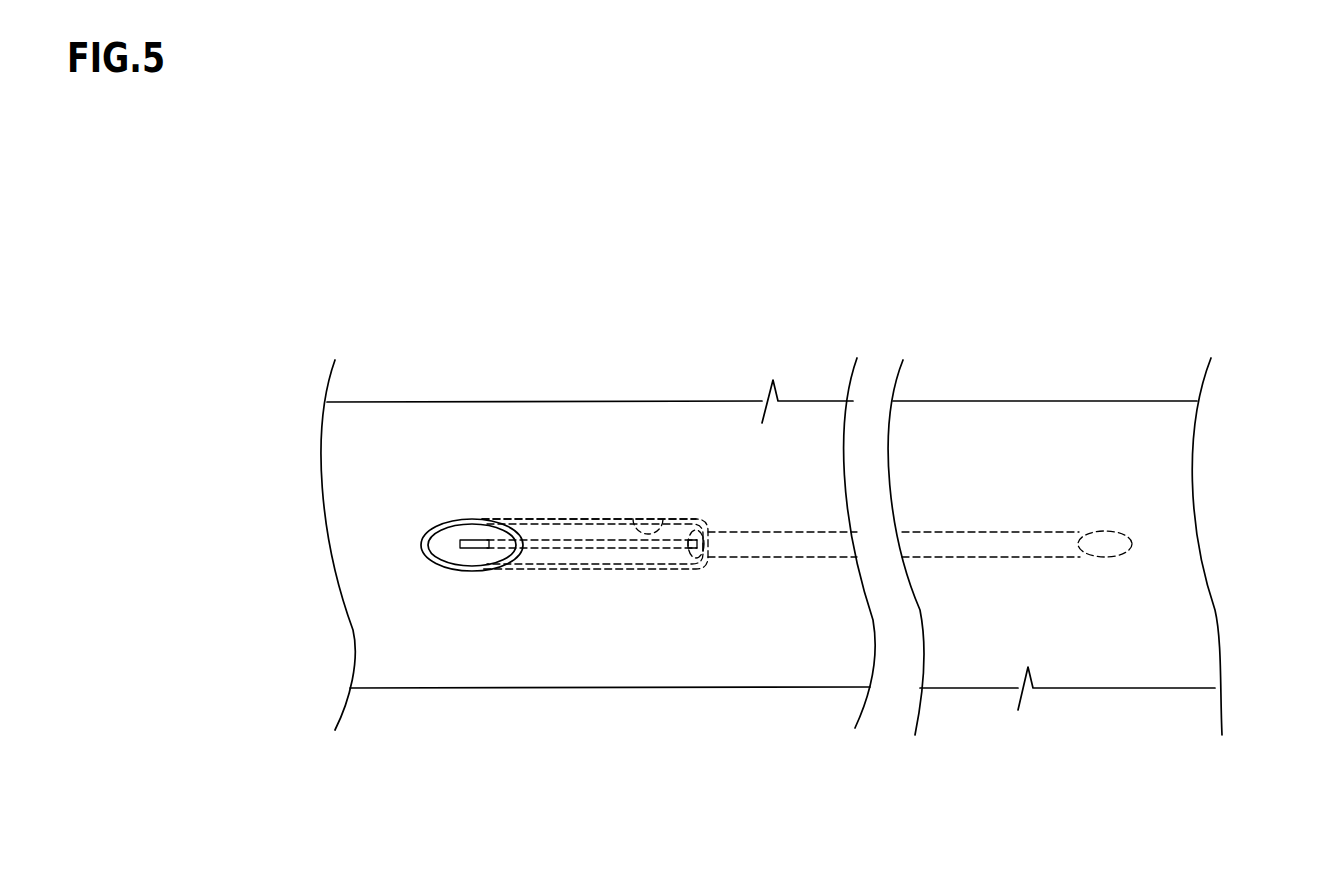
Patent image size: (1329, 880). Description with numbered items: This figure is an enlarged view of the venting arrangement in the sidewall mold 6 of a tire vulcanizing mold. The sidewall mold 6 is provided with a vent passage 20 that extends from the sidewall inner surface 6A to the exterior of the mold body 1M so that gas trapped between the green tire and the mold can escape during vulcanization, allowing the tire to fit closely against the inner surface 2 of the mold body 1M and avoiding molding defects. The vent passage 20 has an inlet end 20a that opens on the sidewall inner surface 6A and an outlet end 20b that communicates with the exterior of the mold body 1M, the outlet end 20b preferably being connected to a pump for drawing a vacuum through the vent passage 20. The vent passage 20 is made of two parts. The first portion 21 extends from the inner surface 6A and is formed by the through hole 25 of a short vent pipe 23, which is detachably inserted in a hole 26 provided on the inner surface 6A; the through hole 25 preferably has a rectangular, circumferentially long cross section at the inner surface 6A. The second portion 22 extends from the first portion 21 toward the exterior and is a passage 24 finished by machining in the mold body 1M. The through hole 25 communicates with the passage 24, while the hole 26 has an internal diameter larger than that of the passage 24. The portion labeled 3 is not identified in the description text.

The mold body 1M is at (398, 383).
The inner surface 2 is at (1055, 526).
The sidewall inner surface 6A is at (1055, 492).
The outer layer 3 is at (1045, 359).
The sidewall mold 6 is at (978, 401).
The vent passage 20 is at (874, 589).
The inlet end 20a is at (472, 540).
The outlet end 20b is at (1122, 530).
The first portion 21 is at (595, 658).
The through hole 25 is at (618, 548).
The second portion 22 is at (894, 664).
The passage 24 is at (782, 557).
The vent pipe 23 is at (579, 517).
The hole 26 is at (658, 530).